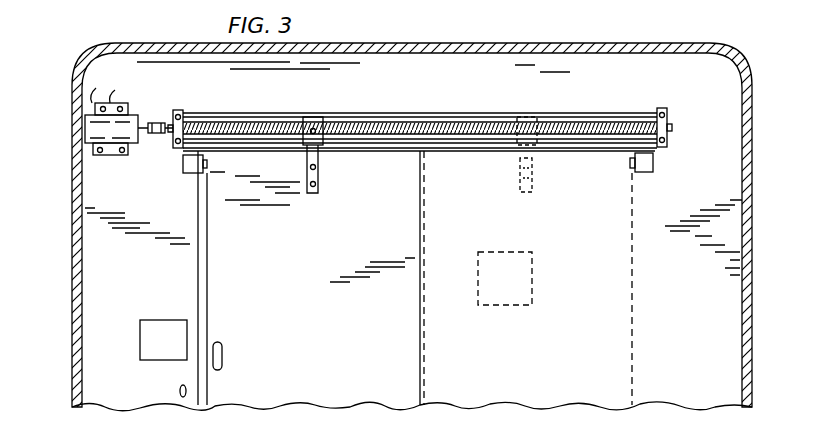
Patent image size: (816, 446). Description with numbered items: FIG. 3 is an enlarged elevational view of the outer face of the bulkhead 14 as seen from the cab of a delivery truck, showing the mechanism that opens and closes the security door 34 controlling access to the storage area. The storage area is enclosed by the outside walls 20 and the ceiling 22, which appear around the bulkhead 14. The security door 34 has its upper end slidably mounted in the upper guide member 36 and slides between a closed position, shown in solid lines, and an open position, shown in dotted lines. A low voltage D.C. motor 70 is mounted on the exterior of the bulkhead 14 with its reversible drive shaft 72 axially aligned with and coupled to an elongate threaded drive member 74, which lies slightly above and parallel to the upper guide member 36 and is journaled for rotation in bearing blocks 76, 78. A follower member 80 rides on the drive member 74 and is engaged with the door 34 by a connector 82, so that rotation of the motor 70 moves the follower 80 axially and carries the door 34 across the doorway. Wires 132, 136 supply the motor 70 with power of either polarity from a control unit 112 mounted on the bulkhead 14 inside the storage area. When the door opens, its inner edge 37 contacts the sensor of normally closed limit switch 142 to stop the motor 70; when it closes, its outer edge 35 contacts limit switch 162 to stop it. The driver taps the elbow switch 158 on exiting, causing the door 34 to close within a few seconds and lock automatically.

The bulkhead 14 is at (413, 103).
The outside walls 20 is at (74, 228).
The ceiling 22 is at (575, 43).
The security door 34 is at (306, 262).
The outer edge 35 is at (204, 292).
The upper guide member 36 is at (608, 143).
The inner edge 37 is at (422, 368).
The motor 70 is at (88, 128).
The drive shaft 72 is at (143, 140).
The threaded drive member 74 is at (465, 118).
The bearing block 76 is at (177, 111).
The bearing block 78 is at (665, 115).
The follower member 80 is at (310, 118).
The connector 82 is at (318, 153).
The control unit 112 is at (536, 272).
The wire 132 is at (92, 89).
The wire 136 is at (118, 92).
The limit switch 142 is at (652, 162).
The elbow switch 158 is at (151, 354).
The limit switch 162 is at (188, 163).